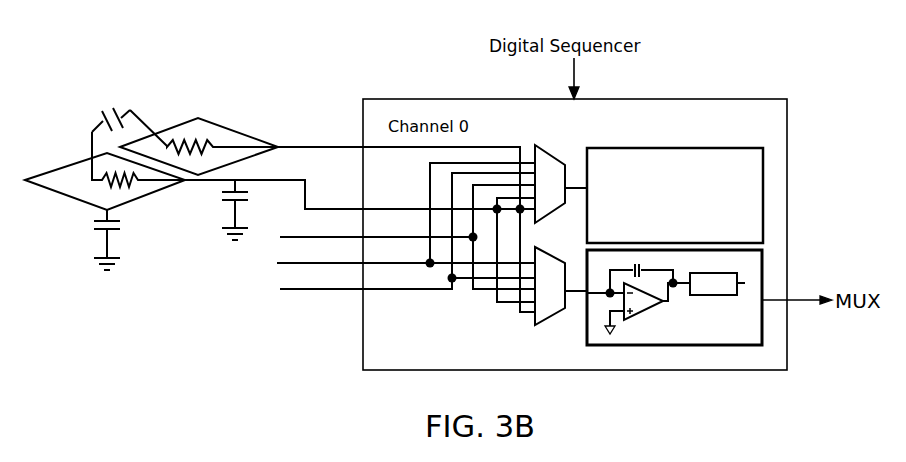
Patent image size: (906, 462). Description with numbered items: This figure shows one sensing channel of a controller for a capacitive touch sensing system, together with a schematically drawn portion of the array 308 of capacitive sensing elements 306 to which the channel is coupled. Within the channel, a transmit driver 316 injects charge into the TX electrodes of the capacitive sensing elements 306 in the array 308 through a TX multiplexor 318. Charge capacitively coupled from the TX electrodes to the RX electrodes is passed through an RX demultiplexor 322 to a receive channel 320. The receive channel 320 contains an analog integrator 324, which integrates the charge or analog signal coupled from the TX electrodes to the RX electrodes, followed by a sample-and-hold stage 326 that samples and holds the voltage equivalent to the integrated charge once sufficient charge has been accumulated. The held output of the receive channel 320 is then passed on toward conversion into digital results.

The capacitive sensing element 306 is at (100, 118).
The array 308 is at (130, 78).
The transmit driver 316 is at (744, 181).
The TX multiplexor 318 is at (557, 155).
The receive channel 320 is at (750, 338).
The RX demultiplexor 322 is at (548, 318).
The analog integrator 324 is at (651, 308).
The sample-and-hold stage 326 is at (718, 295).